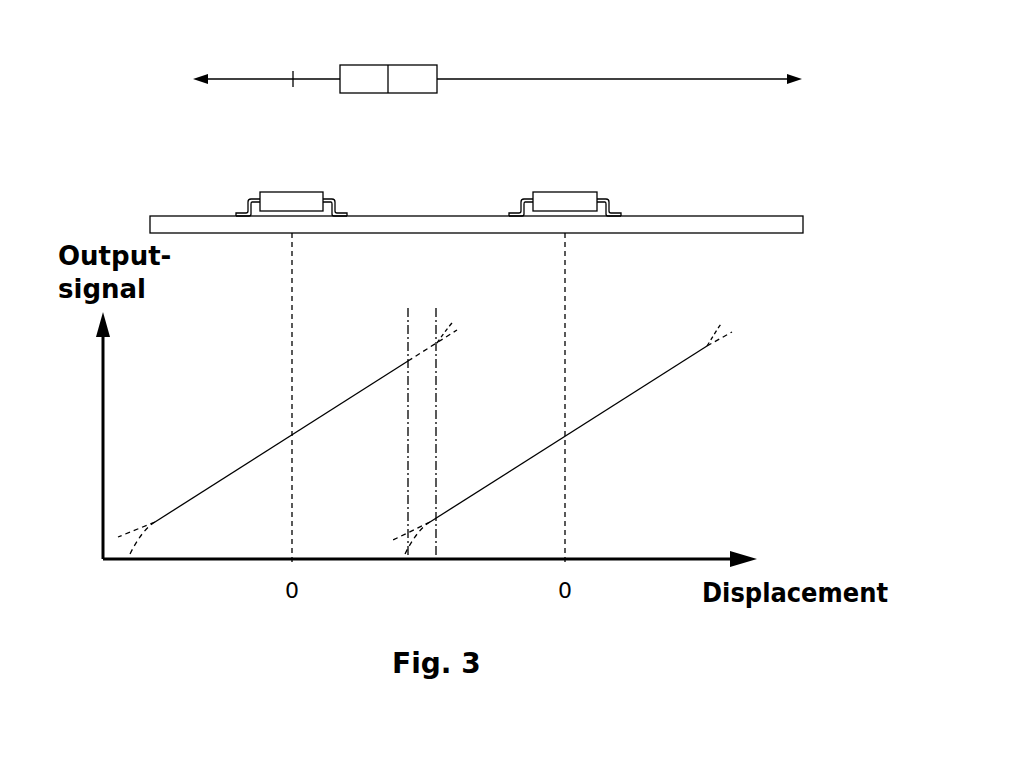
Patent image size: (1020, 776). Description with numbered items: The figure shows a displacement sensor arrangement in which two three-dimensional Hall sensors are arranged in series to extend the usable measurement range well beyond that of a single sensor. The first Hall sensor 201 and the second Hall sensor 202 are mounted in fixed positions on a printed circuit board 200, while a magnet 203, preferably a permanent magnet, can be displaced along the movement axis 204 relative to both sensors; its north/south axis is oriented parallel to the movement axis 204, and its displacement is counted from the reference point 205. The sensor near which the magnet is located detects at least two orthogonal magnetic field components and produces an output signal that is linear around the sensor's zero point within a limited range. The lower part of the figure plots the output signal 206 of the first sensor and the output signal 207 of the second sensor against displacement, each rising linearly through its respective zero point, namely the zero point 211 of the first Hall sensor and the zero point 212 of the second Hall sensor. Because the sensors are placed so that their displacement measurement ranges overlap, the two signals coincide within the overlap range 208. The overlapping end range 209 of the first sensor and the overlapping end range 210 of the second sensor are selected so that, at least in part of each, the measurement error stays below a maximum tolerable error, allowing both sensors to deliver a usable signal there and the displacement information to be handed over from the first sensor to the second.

The printed circuit board 200 is at (710, 228).
The first 3D Hall sensor 201 is at (292, 192).
The second 3D Hall sensor 202 is at (566, 192).
The magnet 203 is at (388, 65).
The movement axis 204 is at (567, 78).
The reference point 205 is at (293, 71).
The output signal of the first 3D Hall sensor 206 is at (233, 470).
The output signal of the second 3D Hall sensor 207 is at (648, 382).
The overlap range 208 is at (423, 437).
The overlapping end range of the first 3D Hall sensor 209 is at (436, 342).
The overlapping end range of the second 3D Hall sensor 210 is at (418, 530).
The zero point of the first 3D Hall sensor 211 is at (292, 552).
The zero point of the second 3D Hall sensor 212 is at (565, 553).